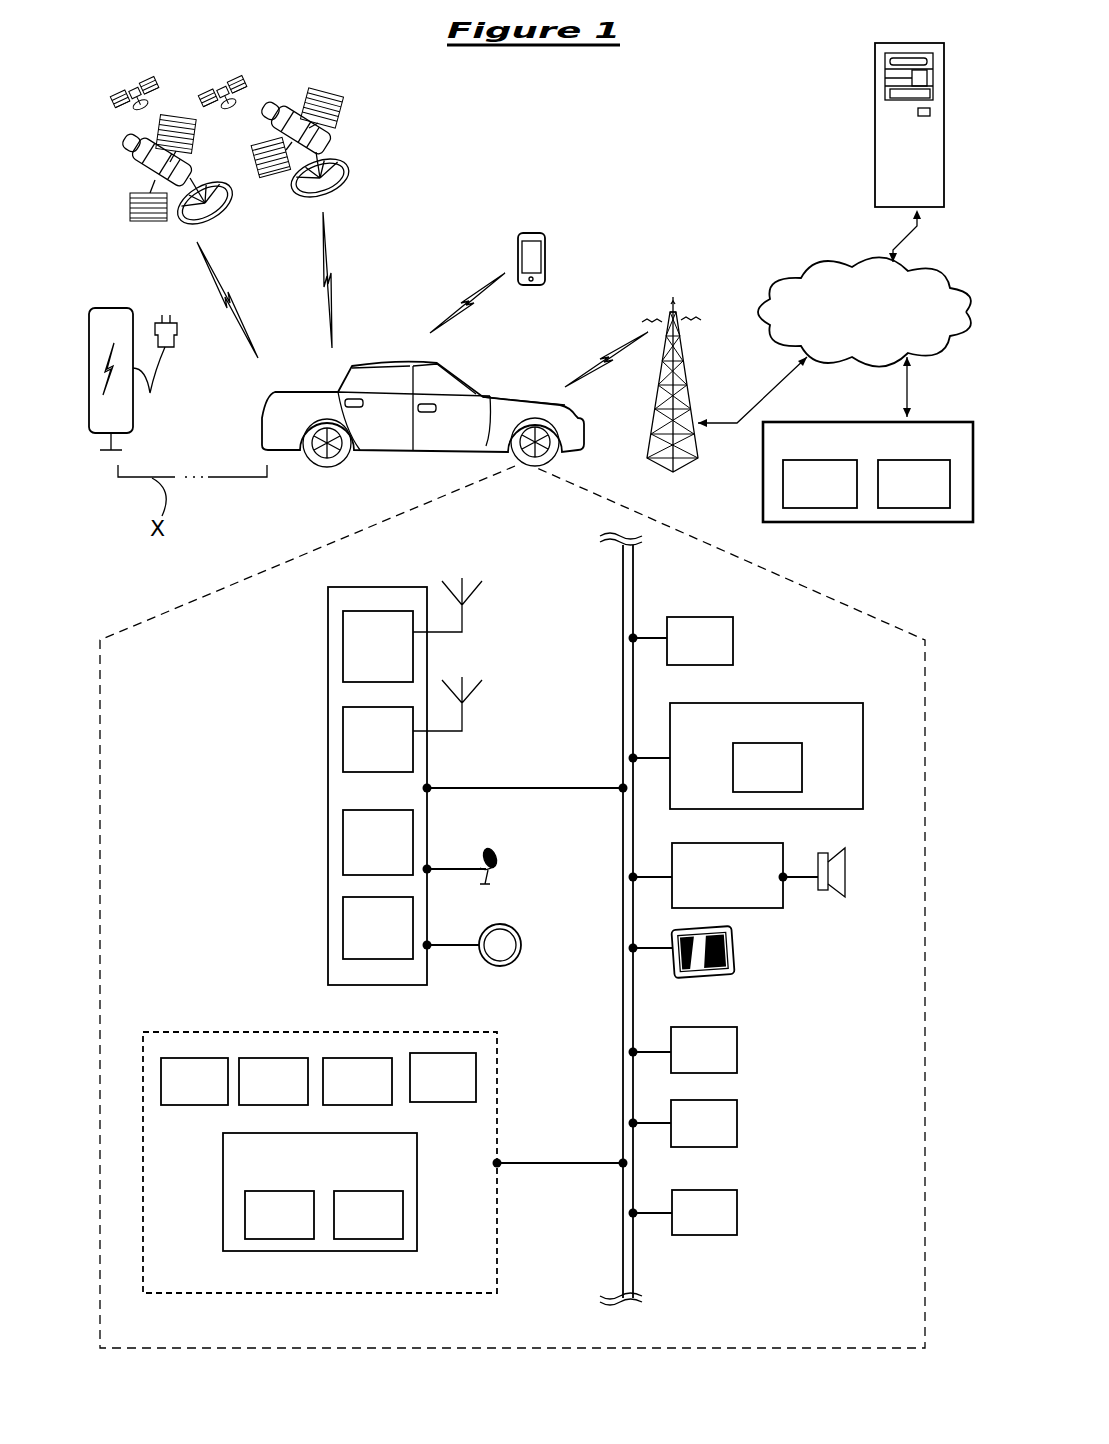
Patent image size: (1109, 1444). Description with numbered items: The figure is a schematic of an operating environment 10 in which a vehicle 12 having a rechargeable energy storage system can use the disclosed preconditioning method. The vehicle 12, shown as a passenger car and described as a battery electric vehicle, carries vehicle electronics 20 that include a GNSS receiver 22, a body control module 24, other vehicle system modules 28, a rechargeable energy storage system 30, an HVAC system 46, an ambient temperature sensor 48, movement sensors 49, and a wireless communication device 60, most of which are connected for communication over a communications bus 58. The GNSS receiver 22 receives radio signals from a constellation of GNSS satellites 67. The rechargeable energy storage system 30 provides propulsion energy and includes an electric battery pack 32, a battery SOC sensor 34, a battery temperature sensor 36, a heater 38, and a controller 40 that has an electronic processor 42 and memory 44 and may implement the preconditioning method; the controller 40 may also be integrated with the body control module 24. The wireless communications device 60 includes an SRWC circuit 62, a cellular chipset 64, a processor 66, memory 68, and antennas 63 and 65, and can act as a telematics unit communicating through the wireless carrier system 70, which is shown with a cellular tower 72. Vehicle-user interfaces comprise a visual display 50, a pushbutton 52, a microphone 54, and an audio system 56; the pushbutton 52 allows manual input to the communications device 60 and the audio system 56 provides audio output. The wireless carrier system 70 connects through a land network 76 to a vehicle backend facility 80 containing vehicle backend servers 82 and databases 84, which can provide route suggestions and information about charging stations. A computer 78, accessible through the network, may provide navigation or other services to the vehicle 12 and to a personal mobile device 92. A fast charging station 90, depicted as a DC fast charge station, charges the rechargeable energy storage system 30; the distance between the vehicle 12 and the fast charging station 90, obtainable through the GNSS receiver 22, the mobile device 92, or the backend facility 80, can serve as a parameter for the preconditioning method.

The operating environment 10 is at (773, 22).
The vehicle 12 is at (409, 364).
The vehicle electronics 20 is at (927, 1050).
The global navigation satellite system (GNSS) receiver 22 is at (683, 1212).
The body control module (BCM) 24 is at (683, 1123).
The other vehicle system modules (VSMs) 28 is at (683, 1050).
The rechargeable energy storage system (RESS) 30 is at (225, 1032).
The electric battery pack 32 is at (194, 1081).
The battery SOC sensor 34 is at (273, 1081).
The battery temperature sensor 36 is at (357, 1081).
The heater 38 is at (443, 1077).
The controller 40 is at (320, 1192).
The electronic processor 42 is at (279, 1215).
The memory 44 is at (368, 1215).
The HVAC system 46 is at (746, 756).
The ambient temperature sensor 48 is at (767, 767).
The movement sensor 49 is at (681, 641).
The visual display 50 is at (735, 945).
The pushbutton 52 is at (518, 934).
The microphone 54 is at (498, 872).
The audio system 56 is at (737, 875).
The communications bus 58 is at (623, 1221).
The wireless communications device 60 is at (328, 783).
The SRWC circuit 62 is at (378, 646).
The antenna 63 is at (463, 620).
The cellular chipset 64 is at (378, 739).
The antenna 65 is at (463, 716).
The processor 66 is at (378, 842).
The GNSS satellites 67 is at (273, 72).
The memory 68 is at (378, 928).
The wireless carrier system 70 is at (697, 283).
The cellular tower 72 is at (682, 358).
The land network 76 is at (940, 338).
The computer 78 is at (877, 117).
The backend facility 80 is at (868, 472).
The vehicle backend server 82 is at (820, 484).
The database 84 is at (914, 484).
The fast charging station 90 is at (116, 306).
The personal mobile device 92 is at (545, 256).